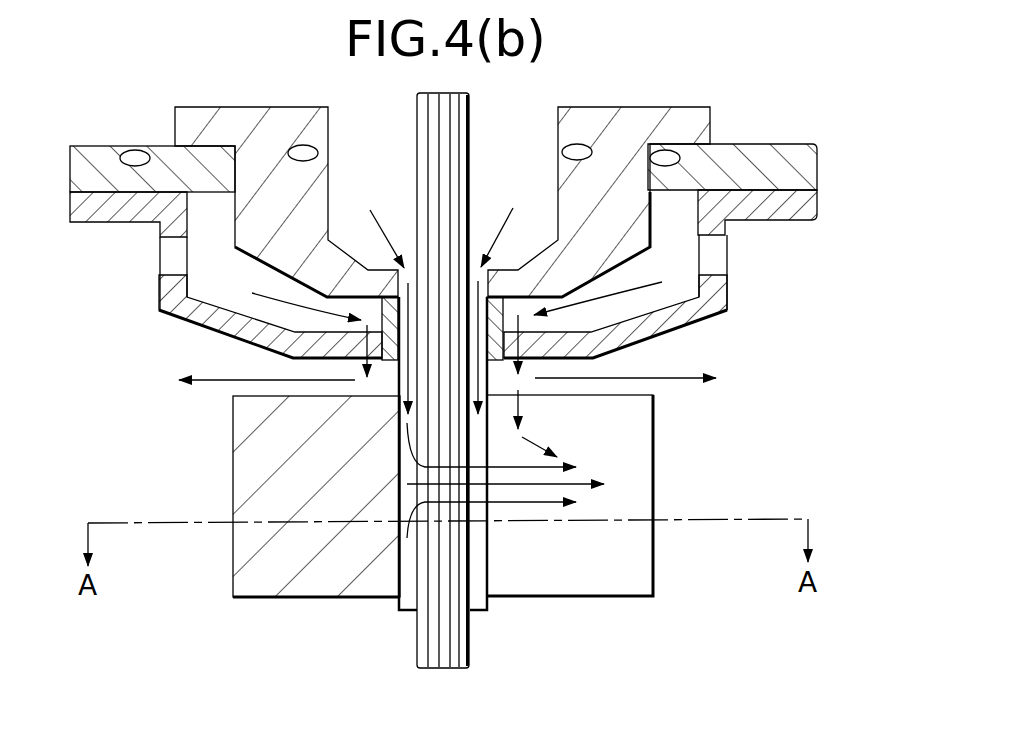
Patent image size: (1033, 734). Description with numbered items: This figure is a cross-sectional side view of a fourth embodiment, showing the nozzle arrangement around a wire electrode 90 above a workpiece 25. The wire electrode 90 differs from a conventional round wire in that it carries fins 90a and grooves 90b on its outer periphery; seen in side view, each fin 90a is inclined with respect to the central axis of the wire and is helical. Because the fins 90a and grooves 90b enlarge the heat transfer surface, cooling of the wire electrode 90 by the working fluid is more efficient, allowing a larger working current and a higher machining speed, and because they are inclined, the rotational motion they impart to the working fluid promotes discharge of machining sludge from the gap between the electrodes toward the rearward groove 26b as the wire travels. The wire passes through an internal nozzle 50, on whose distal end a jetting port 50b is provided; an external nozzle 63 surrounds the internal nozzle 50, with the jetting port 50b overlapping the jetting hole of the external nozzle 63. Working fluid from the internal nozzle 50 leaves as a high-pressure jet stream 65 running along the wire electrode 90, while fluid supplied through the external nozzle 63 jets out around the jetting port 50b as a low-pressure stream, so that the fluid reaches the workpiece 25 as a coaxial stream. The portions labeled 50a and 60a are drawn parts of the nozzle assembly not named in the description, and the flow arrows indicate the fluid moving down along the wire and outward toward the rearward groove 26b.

The internal nozzle 50 is at (695, 122).
The left collar portion of holder 50a is at (215, 322).
The jetting port 50b is at (508, 341).
The inner sleeve 60a is at (378, 342).
The external nozzle 63 is at (725, 295).
The high-pressure jet stream 65 is at (400, 606).
The wire electrode 90 is at (448, 380).
The fin 90a is at (462, 127).
The groove 90b is at (425, 127).
The workpiece 25 is at (242, 580).
The rearward groove 26b is at (640, 570).